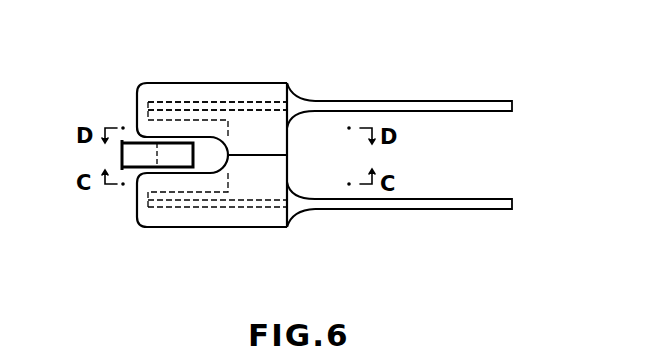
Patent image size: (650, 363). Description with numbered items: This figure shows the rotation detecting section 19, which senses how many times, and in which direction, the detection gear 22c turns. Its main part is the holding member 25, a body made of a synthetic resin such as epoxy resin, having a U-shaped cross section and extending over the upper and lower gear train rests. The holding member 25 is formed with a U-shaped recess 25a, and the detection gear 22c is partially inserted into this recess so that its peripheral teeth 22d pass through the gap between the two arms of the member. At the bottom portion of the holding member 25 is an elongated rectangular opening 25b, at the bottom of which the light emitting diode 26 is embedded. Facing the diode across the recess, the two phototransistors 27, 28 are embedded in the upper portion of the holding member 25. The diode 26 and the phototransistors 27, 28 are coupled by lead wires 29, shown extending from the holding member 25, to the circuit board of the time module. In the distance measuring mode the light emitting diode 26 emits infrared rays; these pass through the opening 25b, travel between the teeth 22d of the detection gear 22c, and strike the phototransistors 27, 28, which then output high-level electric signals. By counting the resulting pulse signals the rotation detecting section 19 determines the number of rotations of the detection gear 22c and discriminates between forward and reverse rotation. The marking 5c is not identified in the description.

The holding member 25 is at (267, 88).
The U-shaped recess 25a is at (206, 148).
The elongated rectangular opening 25b is at (224, 180).
The rotation detecting section 19 is at (302, 92).
The lead wires 29 is at (478, 101).
The phototransistor 27 is at (167, 108).
The phototransistor 28 is at (217, 106).
The light emitting diode 26 is at (175, 200).
The detection gear 22c is at (136, 164).
The teeth 22d is at (185, 157).
The slot / recess 5c is at (157, 129).